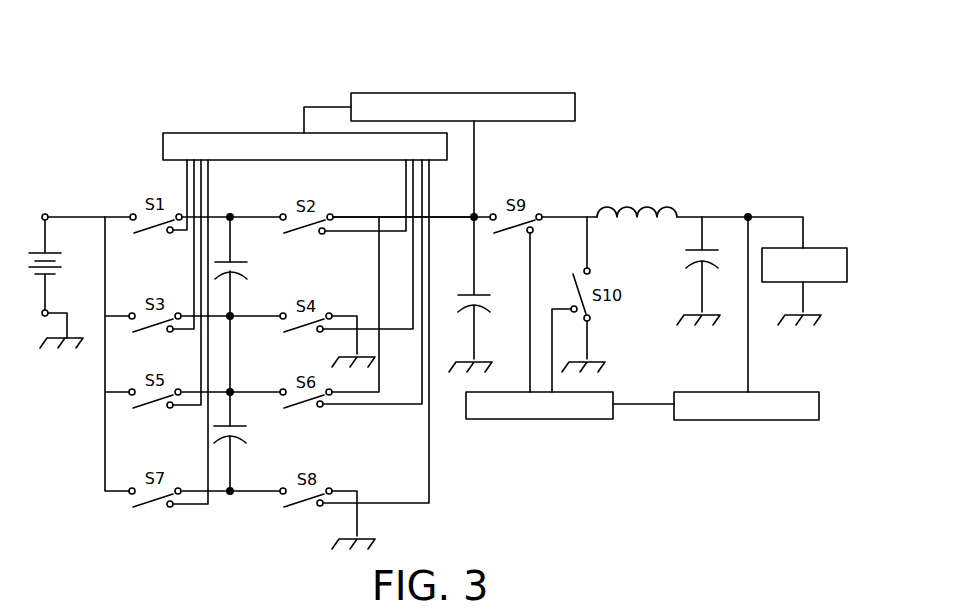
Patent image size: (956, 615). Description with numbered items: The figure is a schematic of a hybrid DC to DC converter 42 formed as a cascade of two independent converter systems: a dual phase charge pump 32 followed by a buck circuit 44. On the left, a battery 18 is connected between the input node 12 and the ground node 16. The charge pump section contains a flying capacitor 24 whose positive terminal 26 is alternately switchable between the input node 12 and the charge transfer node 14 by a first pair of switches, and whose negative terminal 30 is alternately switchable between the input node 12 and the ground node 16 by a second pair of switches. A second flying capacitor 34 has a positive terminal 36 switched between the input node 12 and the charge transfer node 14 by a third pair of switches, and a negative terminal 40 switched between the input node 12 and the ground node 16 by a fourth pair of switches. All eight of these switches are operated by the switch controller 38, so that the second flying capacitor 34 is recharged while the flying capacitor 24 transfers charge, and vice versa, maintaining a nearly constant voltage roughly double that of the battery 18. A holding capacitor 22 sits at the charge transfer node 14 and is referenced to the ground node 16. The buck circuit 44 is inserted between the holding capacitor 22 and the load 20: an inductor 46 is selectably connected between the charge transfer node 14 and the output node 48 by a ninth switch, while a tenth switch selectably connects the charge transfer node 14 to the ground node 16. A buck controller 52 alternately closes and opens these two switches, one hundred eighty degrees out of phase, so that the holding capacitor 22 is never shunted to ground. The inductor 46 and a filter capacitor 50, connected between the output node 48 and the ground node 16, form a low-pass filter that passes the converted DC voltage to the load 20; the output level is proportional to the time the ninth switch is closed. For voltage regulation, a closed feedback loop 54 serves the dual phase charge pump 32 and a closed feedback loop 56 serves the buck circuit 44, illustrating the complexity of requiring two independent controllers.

The input node 12 is at (86, 216).
The charge transfer node 14 is at (360, 216).
The ground node 16 is at (65, 327).
The battery 18 is at (50, 252).
The load 20 is at (812, 247).
The holding capacitor 22 is at (480, 292).
The flying capacitor 24 is at (238, 260).
The positive terminal 26 is at (232, 215).
The negative terminal 30 is at (231, 320).
The dual phase charge pump 32 is at (149, 531).
The second flying capacitor 34 is at (232, 424).
The positive terminal 36 is at (231, 390).
The switch controller 38 is at (163, 147).
The negative terminal 40 is at (230, 495).
The hybrid DC to DC converter 42 is at (293, 62).
The buck circuit 44 is at (716, 485).
The inductor 46 is at (647, 205).
The output node 48 is at (803, 216).
The filter capacitor 50 is at (697, 249).
The buck controller 52 is at (488, 391).
The closed feedback loop 54 is at (576, 107).
The closed feedback loop 56 is at (733, 420).